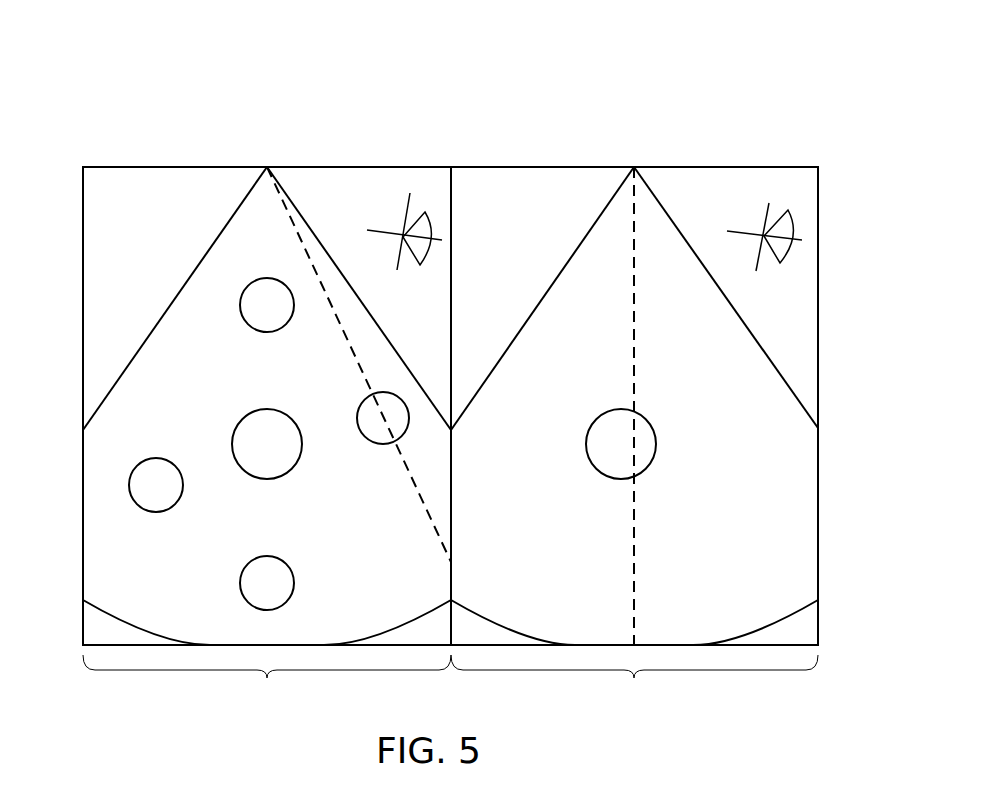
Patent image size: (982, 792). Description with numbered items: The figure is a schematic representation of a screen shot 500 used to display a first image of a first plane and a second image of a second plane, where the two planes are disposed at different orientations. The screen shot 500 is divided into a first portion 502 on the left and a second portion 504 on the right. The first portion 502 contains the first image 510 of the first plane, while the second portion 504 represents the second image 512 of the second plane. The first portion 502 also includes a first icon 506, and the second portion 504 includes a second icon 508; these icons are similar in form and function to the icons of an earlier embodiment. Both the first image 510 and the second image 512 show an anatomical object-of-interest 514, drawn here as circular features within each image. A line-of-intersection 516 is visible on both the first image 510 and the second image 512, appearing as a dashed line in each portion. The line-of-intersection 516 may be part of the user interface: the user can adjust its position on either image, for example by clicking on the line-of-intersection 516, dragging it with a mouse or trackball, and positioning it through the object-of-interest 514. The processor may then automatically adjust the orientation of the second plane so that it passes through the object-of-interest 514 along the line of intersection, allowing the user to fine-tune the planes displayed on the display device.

The screen shot 500 is at (679, 72).
The first portion 502 is at (267, 655).
The second portion 504 is at (634, 655).
The first icon 506 is at (387, 190).
The second icon 508 is at (798, 190).
The first image 510 is at (160, 358).
The second image 512 is at (562, 295).
The anatomical object-of-interest 514 is at (372, 432).
The line-of-intersection 516 is at (360, 368).